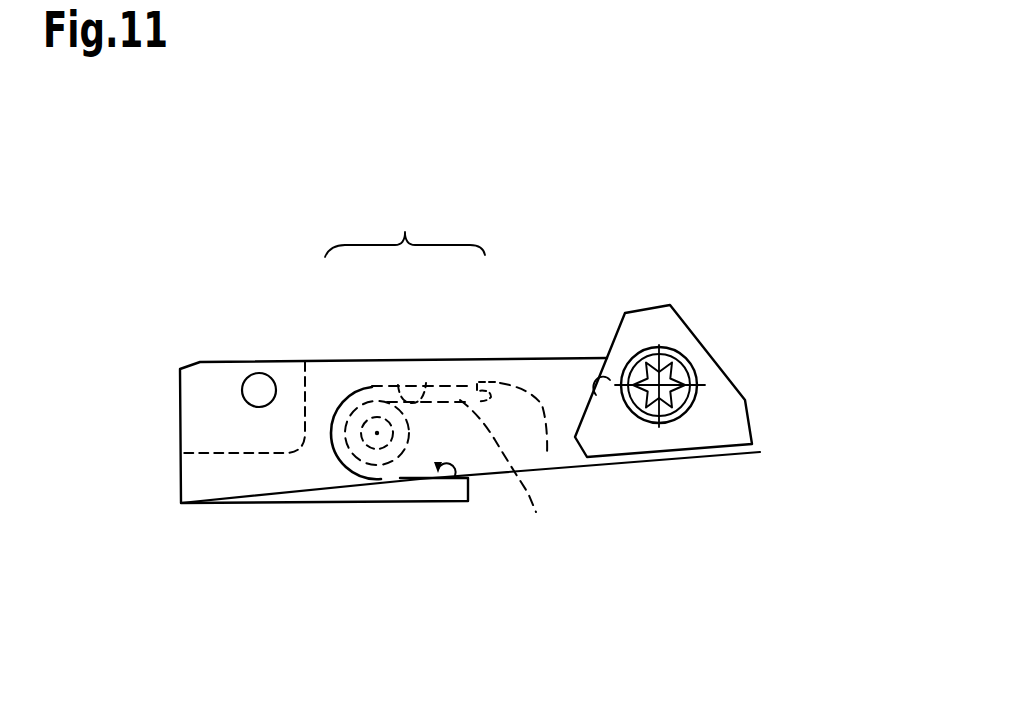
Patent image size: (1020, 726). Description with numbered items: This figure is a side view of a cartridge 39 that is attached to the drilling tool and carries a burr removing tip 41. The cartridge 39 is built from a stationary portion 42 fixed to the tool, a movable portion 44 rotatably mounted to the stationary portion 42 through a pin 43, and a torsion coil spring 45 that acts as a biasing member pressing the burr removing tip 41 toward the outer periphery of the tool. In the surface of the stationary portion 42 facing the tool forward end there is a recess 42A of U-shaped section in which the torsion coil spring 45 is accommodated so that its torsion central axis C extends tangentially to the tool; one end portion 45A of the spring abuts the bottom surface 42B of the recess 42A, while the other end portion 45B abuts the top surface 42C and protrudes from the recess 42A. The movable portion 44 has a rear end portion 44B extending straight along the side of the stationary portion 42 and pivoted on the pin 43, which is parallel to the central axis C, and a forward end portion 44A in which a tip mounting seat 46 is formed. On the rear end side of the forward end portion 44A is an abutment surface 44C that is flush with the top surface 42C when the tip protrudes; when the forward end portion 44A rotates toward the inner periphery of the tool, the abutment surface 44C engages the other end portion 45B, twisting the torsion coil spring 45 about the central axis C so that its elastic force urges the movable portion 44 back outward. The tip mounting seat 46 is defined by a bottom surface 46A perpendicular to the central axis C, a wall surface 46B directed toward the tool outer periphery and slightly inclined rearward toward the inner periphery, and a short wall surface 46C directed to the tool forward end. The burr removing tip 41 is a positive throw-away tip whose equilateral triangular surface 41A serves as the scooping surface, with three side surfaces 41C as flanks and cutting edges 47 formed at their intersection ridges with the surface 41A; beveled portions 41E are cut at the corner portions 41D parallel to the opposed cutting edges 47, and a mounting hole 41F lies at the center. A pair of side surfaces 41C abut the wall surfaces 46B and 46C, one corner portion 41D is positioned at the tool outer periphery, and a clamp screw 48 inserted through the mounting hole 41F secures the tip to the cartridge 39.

The cartridge 39 is at (207, 320).
The burr removing tip 41 is at (717, 320).
The equilateral triangular surface 41A is at (675, 340).
The side surfaces 41C is at (556, 373).
The corner portions 41D is at (645, 286).
The beveled portions 41E is at (626, 312).
The mounting hole 41F is at (664, 453).
The stationary portion 42 is at (366, 480).
The recess 42A is at (513, 472).
The bottom surface 42B is at (456, 438).
The top surface 42C is at (410, 383).
The pin 43 is at (259, 373).
The movable portion 44 is at (405, 230).
The forward end portion 44A is at (557, 356).
The rear end portion 44B is at (322, 362).
The abutment surface 44C is at (478, 381).
The torsion coil spring 45 is at (334, 471).
The one end portion 45A is at (424, 472).
The other end portion 45B is at (455, 476).
The tip mounting seat 46 is at (575, 456).
The bottom surface 46A is at (758, 436).
The wall surface 46B is at (707, 462).
The short wall surface 46C is at (586, 390).
The cutting edges 47 is at (585, 410).
The clamp screw 48 is at (703, 369).
The torsion central axis C is at (378, 436).